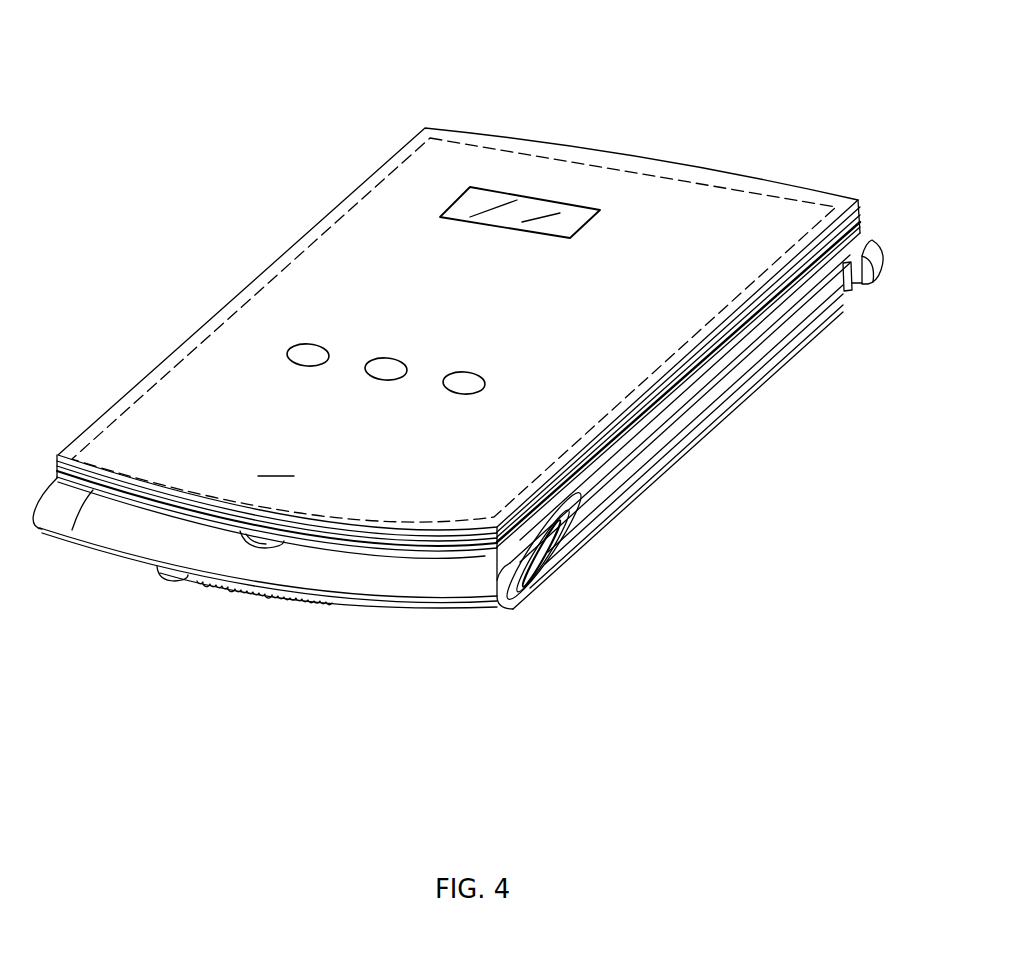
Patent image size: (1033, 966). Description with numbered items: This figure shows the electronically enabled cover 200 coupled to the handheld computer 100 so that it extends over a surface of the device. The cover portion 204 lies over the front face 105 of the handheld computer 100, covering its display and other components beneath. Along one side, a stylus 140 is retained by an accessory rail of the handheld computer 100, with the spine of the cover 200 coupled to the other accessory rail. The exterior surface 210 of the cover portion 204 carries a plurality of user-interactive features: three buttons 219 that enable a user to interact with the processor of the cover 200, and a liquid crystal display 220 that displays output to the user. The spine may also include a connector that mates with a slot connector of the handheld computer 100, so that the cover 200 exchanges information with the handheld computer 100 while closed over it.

The handheld computer 100 is at (221, 617).
The front face 105 is at (470, 573).
The stylus 140 is at (793, 330).
The cover 200 is at (458, 105).
The cover portion 204 is at (683, 212).
The exterior surface 210 is at (276, 463).
The buttons 219 is at (317, 352).
The liquid crystal display 220 is at (542, 212).